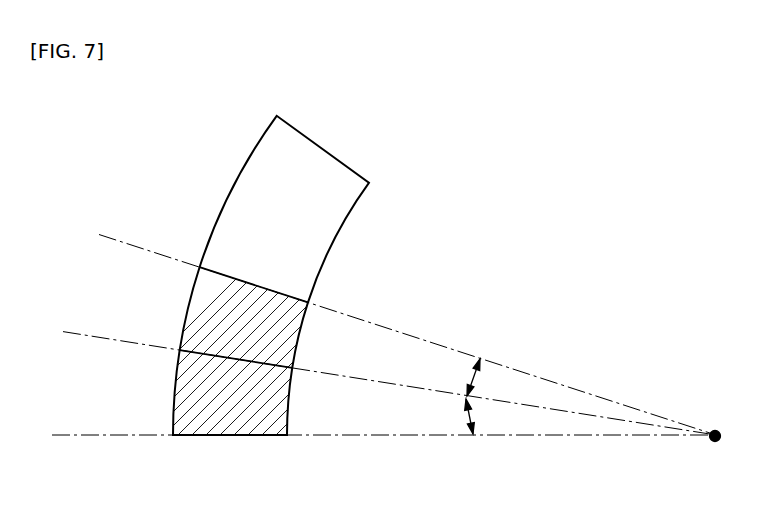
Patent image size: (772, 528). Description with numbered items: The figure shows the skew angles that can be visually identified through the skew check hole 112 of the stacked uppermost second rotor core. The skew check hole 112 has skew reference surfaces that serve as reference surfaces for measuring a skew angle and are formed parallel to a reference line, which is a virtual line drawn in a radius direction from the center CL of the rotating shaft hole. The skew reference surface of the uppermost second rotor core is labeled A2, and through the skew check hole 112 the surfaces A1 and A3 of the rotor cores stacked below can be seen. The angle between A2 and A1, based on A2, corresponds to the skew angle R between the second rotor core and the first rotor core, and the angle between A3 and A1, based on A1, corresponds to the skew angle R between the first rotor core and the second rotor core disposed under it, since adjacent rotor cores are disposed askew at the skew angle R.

The skew check hole 112 is at (235, 183).
The skew reference surface A1 is at (181, 351).
The skew reference surface A2 is at (247, 437).
The skew reference surface A3 is at (200, 269).
The skew angle R is at (471, 376).
The center CL is at (715, 432).